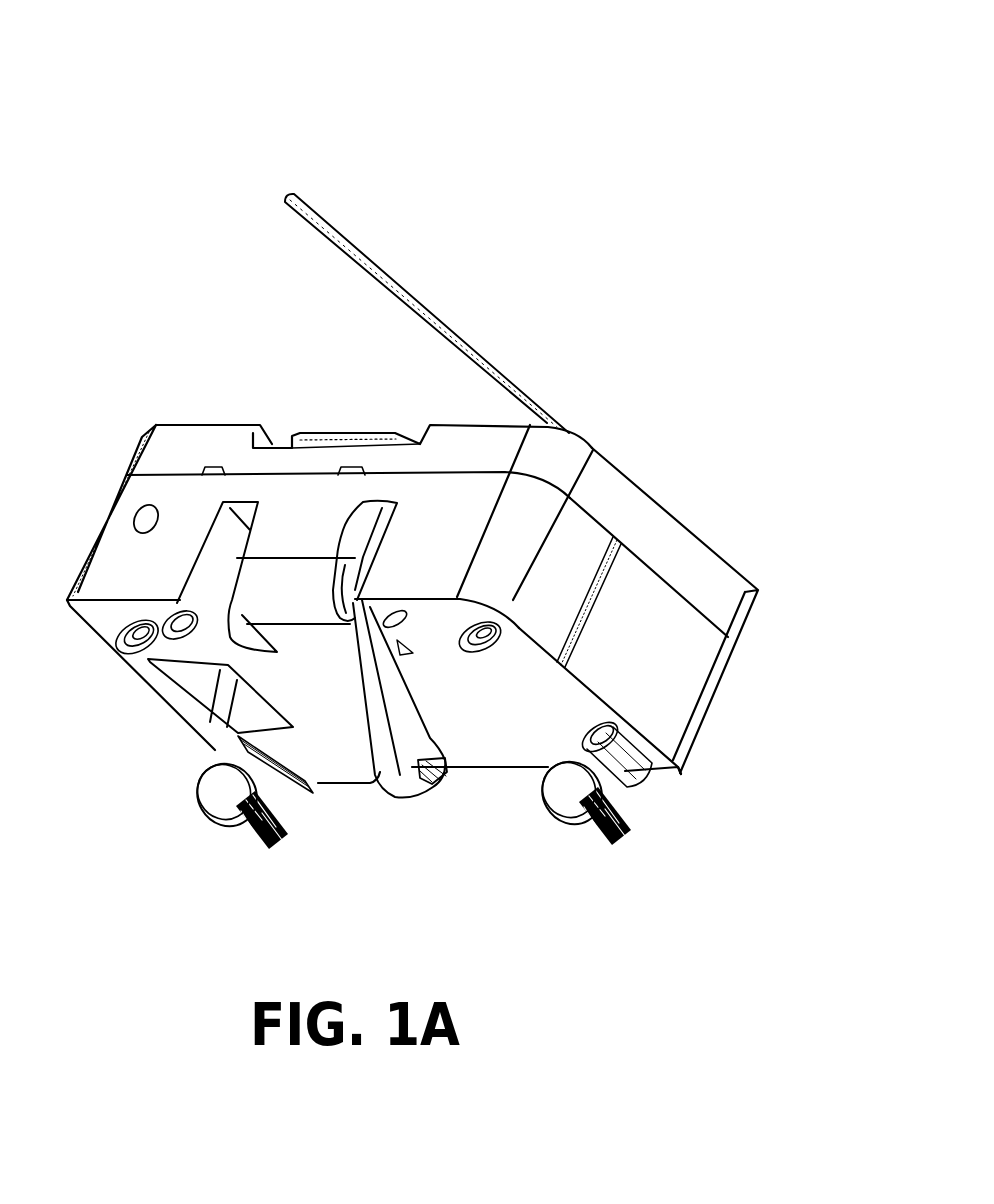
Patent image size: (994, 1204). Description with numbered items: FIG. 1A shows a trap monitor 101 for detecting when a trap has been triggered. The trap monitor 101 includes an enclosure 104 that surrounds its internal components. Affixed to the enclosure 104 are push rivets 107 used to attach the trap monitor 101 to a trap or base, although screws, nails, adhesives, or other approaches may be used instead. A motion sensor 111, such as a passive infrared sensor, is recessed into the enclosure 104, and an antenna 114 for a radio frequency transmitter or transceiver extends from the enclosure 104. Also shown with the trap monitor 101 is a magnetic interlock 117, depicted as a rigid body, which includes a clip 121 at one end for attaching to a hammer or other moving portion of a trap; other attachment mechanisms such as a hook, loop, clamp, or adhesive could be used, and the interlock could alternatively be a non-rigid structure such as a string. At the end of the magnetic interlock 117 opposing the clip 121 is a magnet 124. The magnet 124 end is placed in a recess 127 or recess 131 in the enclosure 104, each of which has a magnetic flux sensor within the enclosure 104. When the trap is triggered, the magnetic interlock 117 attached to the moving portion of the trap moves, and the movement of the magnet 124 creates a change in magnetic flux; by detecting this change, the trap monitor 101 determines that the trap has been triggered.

The trap monitor 101 is at (733, 95).
The enclosure 104 is at (735, 597).
The push rivets 107 is at (623, 833).
The motion sensor 111 is at (287, 710).
The antenna 114 is at (472, 363).
The magnetic interlock 117 is at (420, 700).
The clip 121 is at (438, 784).
The magnet 124 is at (350, 545).
The recess 127 is at (380, 533).
The recess 131 is at (210, 587).